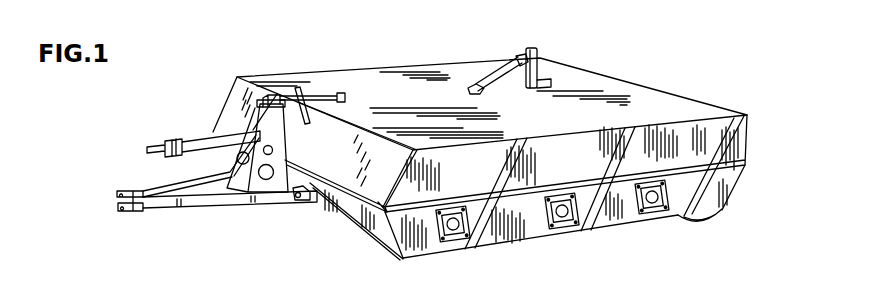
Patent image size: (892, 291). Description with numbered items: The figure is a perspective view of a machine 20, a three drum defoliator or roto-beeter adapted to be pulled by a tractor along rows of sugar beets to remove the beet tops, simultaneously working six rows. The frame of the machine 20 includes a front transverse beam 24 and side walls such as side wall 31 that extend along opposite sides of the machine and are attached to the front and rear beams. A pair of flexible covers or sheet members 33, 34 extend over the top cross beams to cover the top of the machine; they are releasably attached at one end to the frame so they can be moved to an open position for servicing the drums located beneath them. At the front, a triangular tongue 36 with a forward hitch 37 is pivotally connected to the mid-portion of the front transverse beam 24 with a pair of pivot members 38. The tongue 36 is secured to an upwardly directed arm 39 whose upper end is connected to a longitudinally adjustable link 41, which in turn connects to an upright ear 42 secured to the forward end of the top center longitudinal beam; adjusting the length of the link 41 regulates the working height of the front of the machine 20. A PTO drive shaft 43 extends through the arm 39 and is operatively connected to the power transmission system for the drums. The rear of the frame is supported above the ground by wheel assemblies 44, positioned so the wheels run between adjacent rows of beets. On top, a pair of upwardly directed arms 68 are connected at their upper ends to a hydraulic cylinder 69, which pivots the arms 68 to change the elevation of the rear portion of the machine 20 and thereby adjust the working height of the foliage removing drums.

The machine 20 is at (449, 57).
The front transverse beam 24 is at (353, 212).
The side wall 31 is at (700, 140).
The flexible cover 33 is at (408, 70).
The flexible cover 34 is at (648, 101).
The triangular tongue 36 is at (247, 195).
The forward hitch 37 is at (131, 211).
The pivot member 38 is at (333, 208).
The upwardly directed arm 39 is at (288, 140).
The longitudinally adjustable link 41 is at (280, 95).
The upright ear 42 is at (333, 92).
The PTO drive shaft 43 is at (197, 141).
The wheel assembly 44 is at (713, 218).
The upwardly directed arm 68 is at (541, 62).
The hydraulic cylinder 69 is at (498, 62).